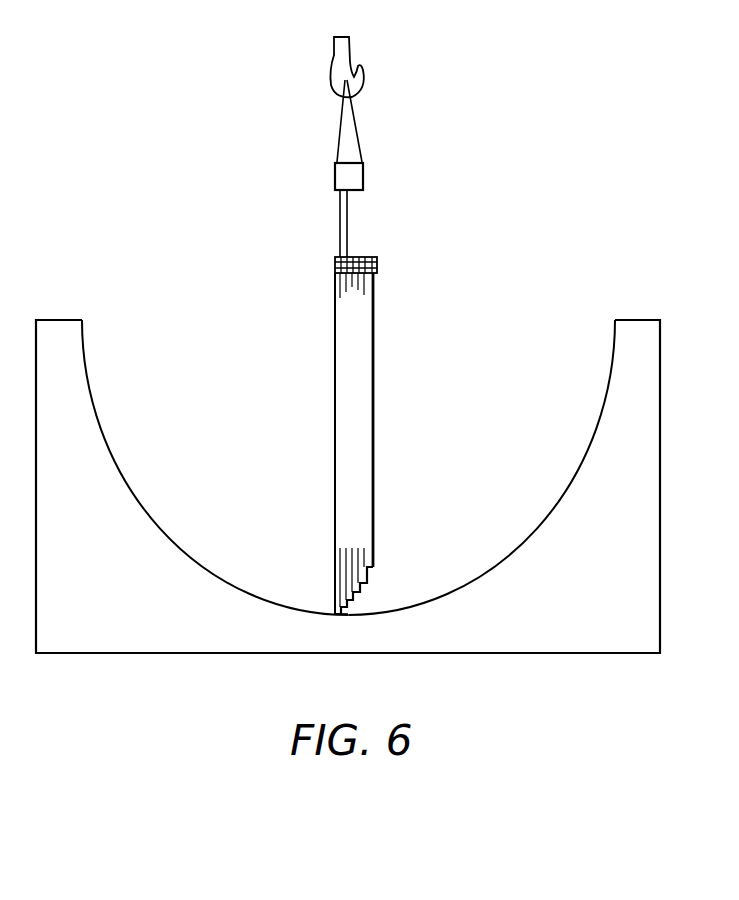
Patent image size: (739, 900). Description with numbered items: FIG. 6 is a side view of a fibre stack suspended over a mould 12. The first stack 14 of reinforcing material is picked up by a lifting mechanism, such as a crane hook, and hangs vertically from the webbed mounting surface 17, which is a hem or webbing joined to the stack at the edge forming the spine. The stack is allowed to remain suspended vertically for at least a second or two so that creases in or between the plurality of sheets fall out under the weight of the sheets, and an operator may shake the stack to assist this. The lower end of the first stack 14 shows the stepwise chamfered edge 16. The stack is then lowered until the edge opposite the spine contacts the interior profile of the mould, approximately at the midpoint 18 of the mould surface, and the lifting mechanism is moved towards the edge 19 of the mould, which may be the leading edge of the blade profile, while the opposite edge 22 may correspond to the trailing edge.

The mould 12 is at (600, 640).
The first stack 14 is at (375, 437).
The stepwise chamfered edge 16 is at (362, 582).
The mounting surface 17 is at (340, 222).
The midpoint 18 is at (340, 615).
The edge 19 is at (85, 320).
The edge 22 is at (615, 320).